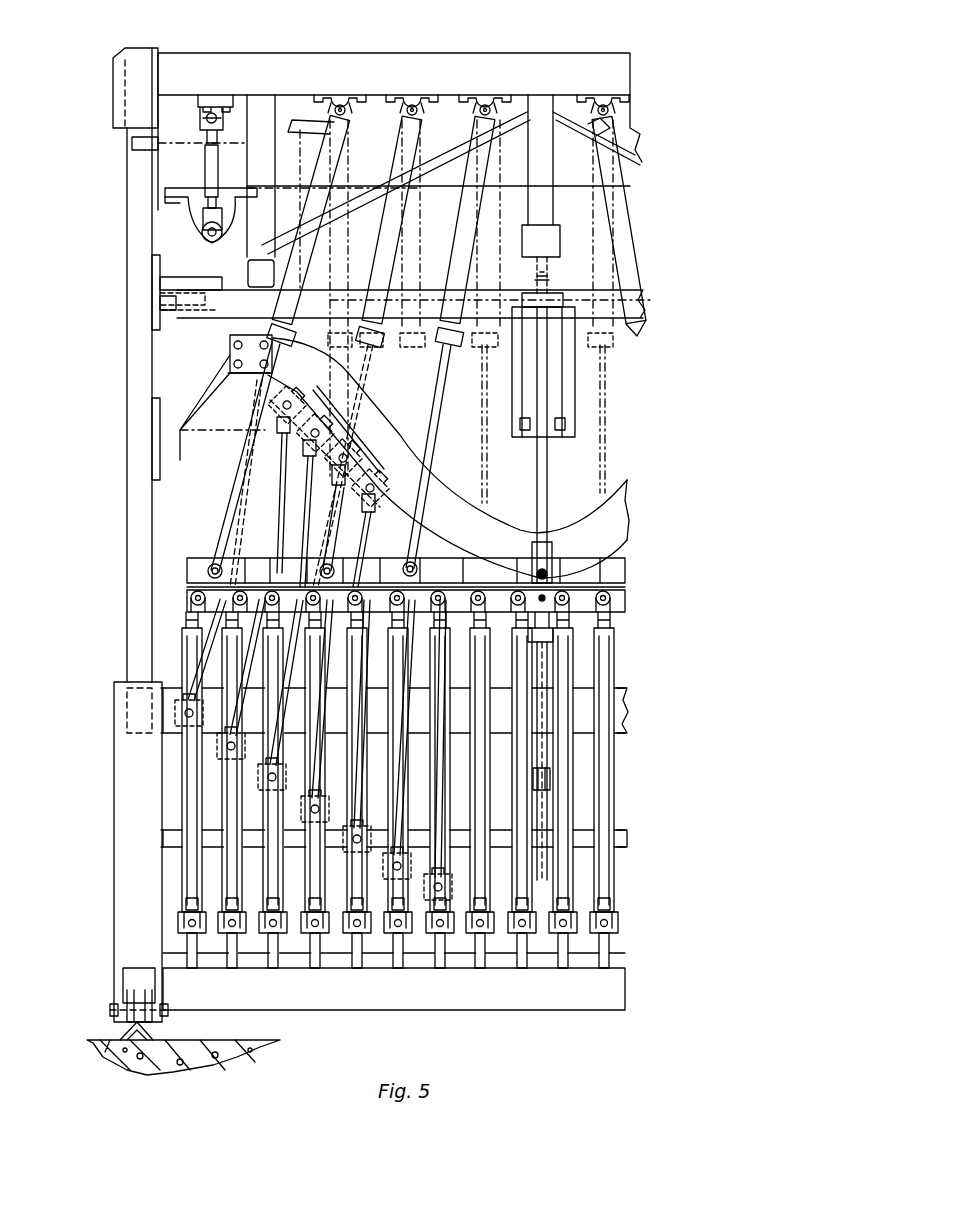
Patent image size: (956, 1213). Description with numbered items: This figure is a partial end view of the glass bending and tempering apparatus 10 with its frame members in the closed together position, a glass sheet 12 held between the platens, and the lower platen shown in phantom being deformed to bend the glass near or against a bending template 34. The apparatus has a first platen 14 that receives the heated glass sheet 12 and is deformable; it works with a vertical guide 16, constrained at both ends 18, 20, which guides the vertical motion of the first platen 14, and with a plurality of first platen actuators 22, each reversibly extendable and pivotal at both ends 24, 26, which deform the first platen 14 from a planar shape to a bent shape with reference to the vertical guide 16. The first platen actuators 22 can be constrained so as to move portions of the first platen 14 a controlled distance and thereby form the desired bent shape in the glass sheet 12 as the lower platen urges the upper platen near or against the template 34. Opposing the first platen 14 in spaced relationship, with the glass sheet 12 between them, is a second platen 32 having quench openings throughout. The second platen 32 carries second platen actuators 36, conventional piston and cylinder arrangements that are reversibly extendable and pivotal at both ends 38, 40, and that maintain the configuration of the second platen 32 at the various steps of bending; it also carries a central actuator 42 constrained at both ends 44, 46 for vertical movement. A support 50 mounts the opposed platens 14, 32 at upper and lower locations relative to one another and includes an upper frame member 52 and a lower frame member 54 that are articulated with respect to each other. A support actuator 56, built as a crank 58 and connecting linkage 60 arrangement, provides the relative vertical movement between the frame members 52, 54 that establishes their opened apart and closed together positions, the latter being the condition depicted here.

The glass bending and tempering apparatus 10 is at (672, 212).
The glass sheet 12 is at (627, 587).
The first platen 14 is at (625, 604).
The vertical guide 16 is at (550, 700).
The end of vertical guide 18 is at (565, 614).
The end of vertical guide 20 is at (552, 772).
The first platen actuators 22 is at (568, 795).
The pivotal end of first platen actuator 24 is at (280, 422).
The pivotal end of first platen actuator 26 is at (610, 917).
The second platen 32 is at (270, 410).
The template 34 is at (615, 505).
The second platen actuators 36 is at (418, 146).
The pivotal end of second platen actuator 38 is at (213, 570).
The pivotal end of second platen actuator 40 is at (342, 106).
The central actuator 42 is at (552, 385).
The end of central actuator 44 is at (560, 560).
The end of central actuator 46 is at (552, 302).
The support 50 is at (130, 540).
The upper frame member 52 is at (262, 75).
The lower frame member 54 is at (175, 305).
The support actuator 56 is at (195, 213).
The crank 58 is at (205, 232).
The connecting linkage 60 is at (215, 165).